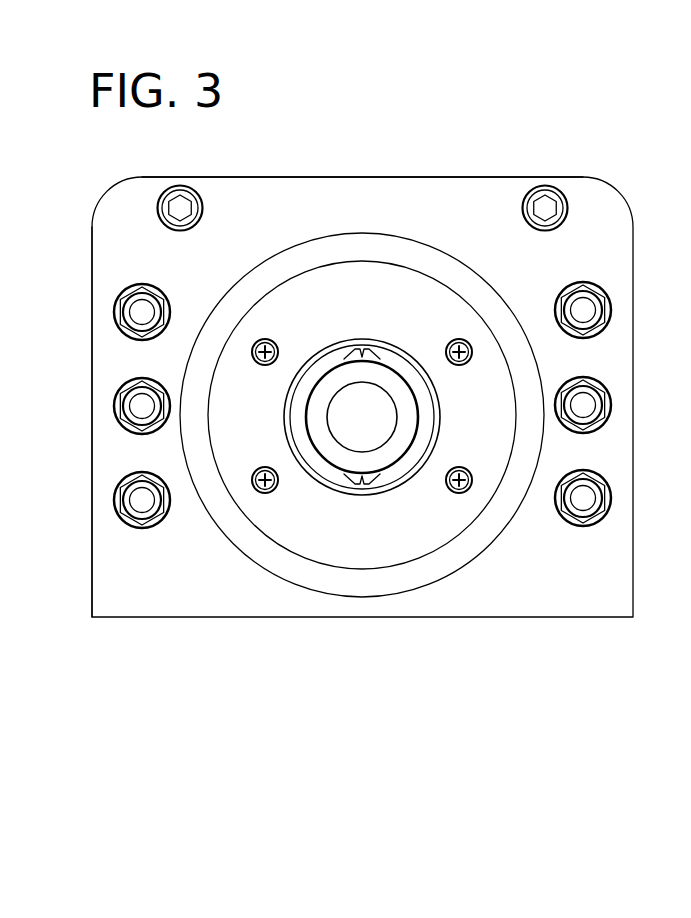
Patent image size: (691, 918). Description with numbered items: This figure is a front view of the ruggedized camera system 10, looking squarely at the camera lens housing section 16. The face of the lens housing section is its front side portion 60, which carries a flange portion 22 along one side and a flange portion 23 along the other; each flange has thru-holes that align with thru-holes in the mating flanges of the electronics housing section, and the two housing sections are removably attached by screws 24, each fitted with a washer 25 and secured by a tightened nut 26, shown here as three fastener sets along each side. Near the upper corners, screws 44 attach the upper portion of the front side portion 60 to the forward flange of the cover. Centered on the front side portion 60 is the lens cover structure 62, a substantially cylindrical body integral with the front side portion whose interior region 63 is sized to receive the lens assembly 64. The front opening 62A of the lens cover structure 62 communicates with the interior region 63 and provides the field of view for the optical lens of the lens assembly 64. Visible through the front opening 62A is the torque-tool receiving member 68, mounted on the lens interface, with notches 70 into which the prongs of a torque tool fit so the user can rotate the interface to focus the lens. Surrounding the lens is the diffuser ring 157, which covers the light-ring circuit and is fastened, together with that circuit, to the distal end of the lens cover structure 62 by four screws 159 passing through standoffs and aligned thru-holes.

The ruggedized camera system 10 is at (265, 708).
The camera lens housing section 16 is at (460, 200).
The flange portion 22 is at (605, 547).
The flange portion 23 is at (120, 458).
The screw 24 is at (138, 312).
The washer 25 is at (148, 290).
The nut 26 is at (122, 290).
The screw 44 is at (181, 208).
The front side portion 60 is at (338, 200).
The lens cover structure 62 is at (245, 275).
The front opening 62A is at (308, 453).
The interior region 63 is at (334, 473).
The lens assembly 64 is at (412, 415).
The torque-tool receiving member 68 is at (376, 478).
The notches 70 is at (362, 347).
The diffuser ring 157 is at (277, 512).
The screws 159 is at (277, 343).